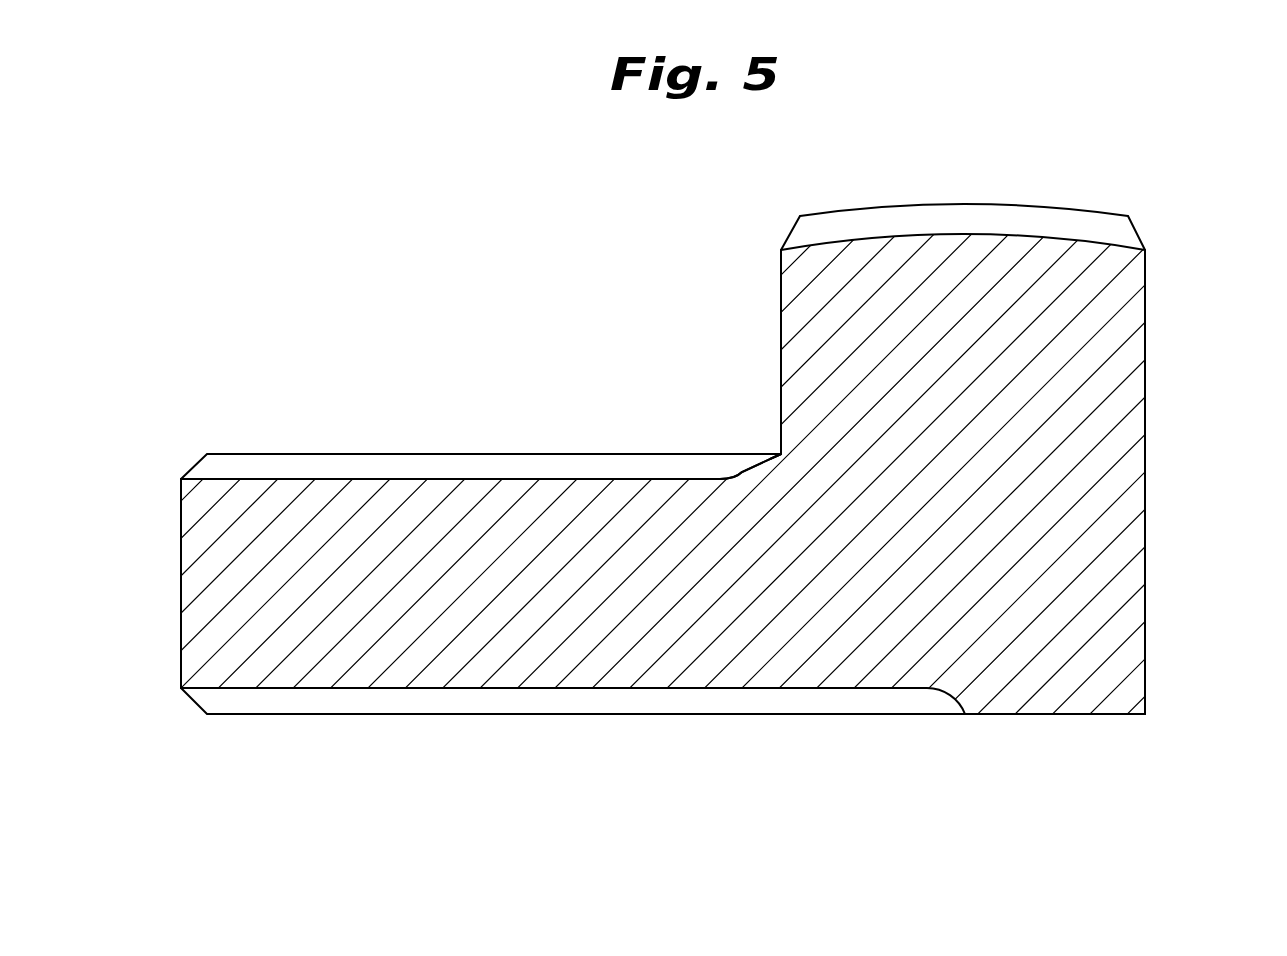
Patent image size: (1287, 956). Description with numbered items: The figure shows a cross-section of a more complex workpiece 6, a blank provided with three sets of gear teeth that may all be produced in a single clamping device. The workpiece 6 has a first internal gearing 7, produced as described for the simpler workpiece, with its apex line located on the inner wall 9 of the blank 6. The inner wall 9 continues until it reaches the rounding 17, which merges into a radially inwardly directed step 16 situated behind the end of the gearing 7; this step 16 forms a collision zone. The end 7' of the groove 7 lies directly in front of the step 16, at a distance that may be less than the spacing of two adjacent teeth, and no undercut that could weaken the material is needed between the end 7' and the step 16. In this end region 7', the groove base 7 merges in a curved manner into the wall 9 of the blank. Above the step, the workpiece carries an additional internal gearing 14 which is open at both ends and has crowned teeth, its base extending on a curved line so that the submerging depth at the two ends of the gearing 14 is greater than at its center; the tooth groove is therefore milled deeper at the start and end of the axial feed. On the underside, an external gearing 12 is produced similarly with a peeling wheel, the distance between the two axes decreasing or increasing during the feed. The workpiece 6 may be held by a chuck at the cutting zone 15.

The workpiece 6 is at (1023, 493).
The first internal gearing 7 is at (455, 418).
The end of the groove 7' is at (699, 417).
The inner wall 9 is at (521, 453).
The external gearing 12 is at (545, 698).
The additional internal gearing 14 is at (962, 222).
The cutting zone 15 is at (1043, 715).
The step 16 is at (781, 320).
The rounding 17 is at (780, 450).